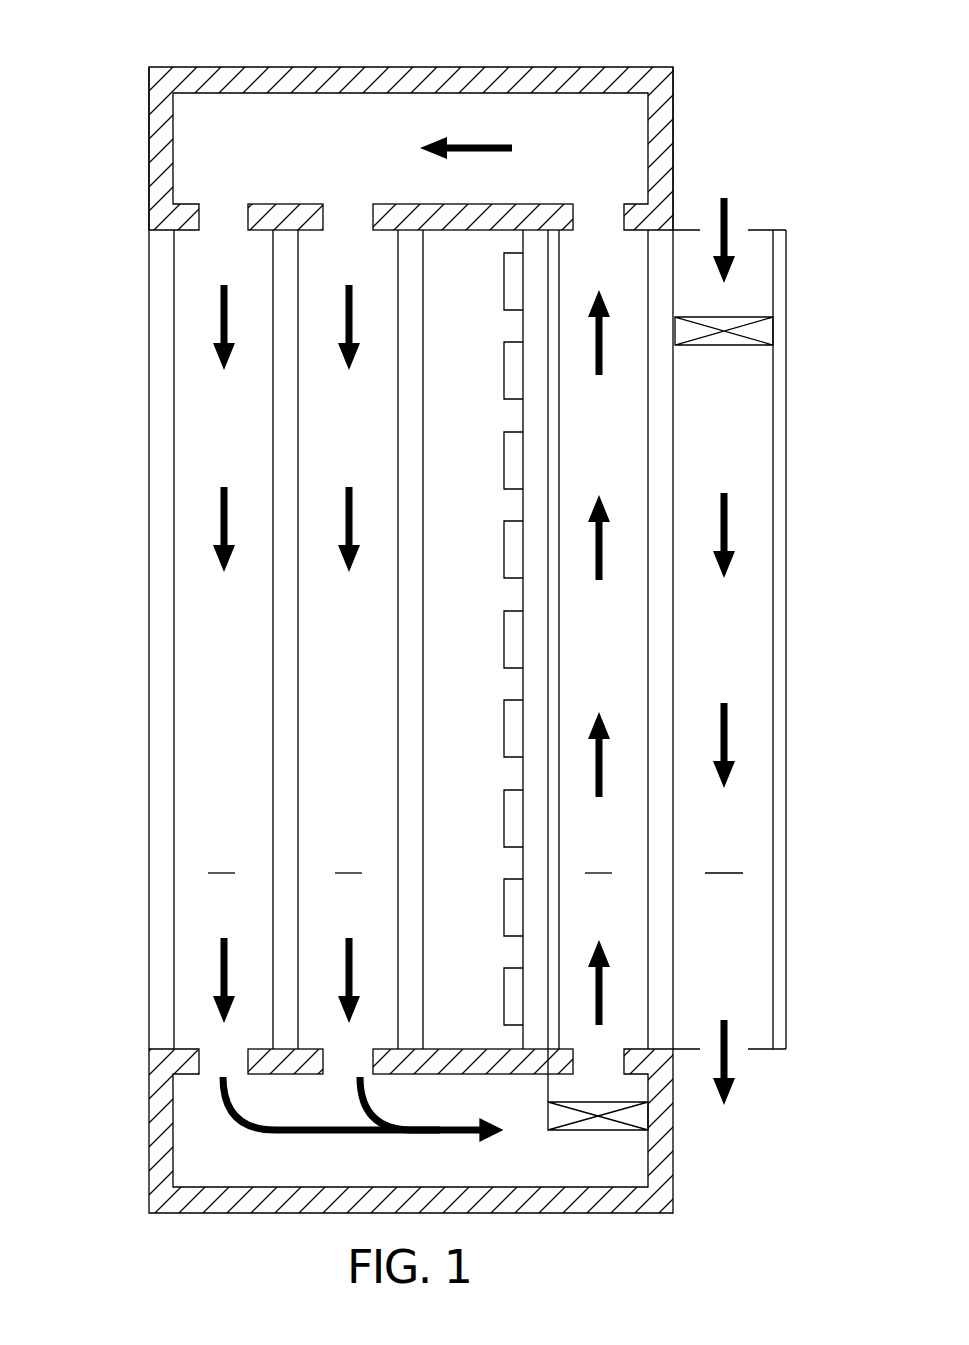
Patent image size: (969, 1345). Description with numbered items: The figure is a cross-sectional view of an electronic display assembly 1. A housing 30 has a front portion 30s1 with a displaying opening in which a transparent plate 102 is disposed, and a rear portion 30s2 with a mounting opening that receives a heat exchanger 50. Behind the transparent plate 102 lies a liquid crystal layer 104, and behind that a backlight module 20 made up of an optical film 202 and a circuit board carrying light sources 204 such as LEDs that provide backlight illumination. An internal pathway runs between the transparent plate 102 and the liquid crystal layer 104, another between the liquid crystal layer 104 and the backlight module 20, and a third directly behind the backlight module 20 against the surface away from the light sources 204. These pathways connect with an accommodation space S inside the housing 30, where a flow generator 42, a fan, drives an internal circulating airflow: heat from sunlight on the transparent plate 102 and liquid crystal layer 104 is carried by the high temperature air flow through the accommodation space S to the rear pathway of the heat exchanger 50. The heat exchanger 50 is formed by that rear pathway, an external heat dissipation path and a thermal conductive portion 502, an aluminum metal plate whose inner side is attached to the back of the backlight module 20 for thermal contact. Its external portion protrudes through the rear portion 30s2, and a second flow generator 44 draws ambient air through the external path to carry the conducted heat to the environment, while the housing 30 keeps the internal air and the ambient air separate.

The electronic display assembly 1 is at (82, 30).
The housing 30 is at (413, 78).
The front portion of the housing 30s1 is at (149, 146).
The rear portion of the housing 30s2 is at (673, 108).
The transparent plate 102 is at (160, 349).
The liquid crystal layer 104 is at (290, 405).
The backlight module 20 is at (76, 650).
The optical film 202 is at (410, 666).
The light sources 204 is at (510, 720).
The flow generator 44 is at (723, 345).
The flow generator 42 is at (625, 1132).
The heat exchanger 50 is at (788, 637).
The thermal conductive portion 502 is at (675, 826).
The accommodation space S is at (200, 1165).